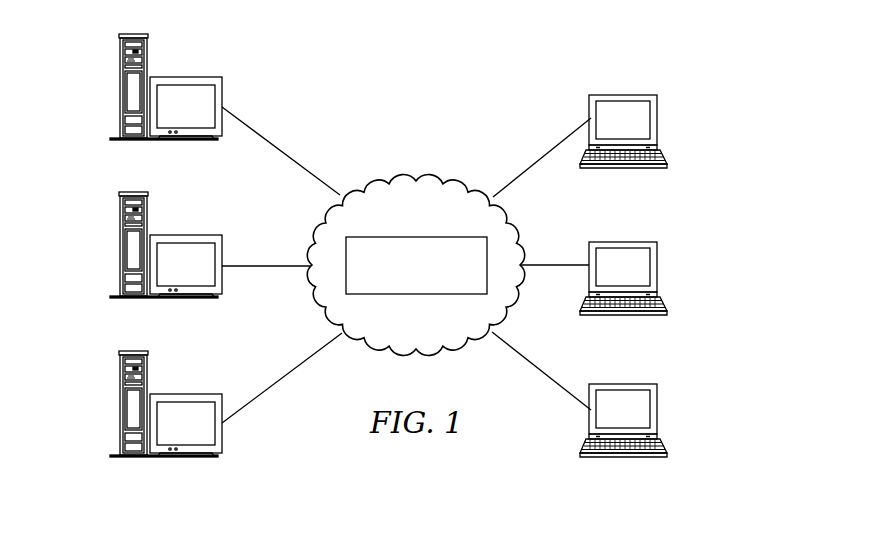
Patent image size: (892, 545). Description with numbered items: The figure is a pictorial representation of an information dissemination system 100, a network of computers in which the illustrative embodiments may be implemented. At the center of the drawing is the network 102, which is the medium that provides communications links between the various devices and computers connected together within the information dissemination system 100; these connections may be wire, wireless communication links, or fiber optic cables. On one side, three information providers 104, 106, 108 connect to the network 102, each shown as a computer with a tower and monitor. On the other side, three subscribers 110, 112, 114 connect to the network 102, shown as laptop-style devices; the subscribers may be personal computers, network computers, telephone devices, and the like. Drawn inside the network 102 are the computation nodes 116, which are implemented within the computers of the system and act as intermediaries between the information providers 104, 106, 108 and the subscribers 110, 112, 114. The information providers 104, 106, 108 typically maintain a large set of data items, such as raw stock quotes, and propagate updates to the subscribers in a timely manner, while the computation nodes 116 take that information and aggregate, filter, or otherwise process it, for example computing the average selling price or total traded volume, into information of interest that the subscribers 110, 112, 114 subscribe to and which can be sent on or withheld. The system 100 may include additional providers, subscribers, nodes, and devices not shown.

The information dissemination system 100 is at (523, 67).
The network 102 is at (436, 179).
The information provider 104 is at (120, 90).
The information provider 106 is at (120, 248).
The information provider 108 is at (120, 405).
The subscriber 110 is at (658, 119).
The subscriber 112 is at (658, 265).
The subscriber 114 is at (658, 410).
The computation nodes 116 is at (416, 294).